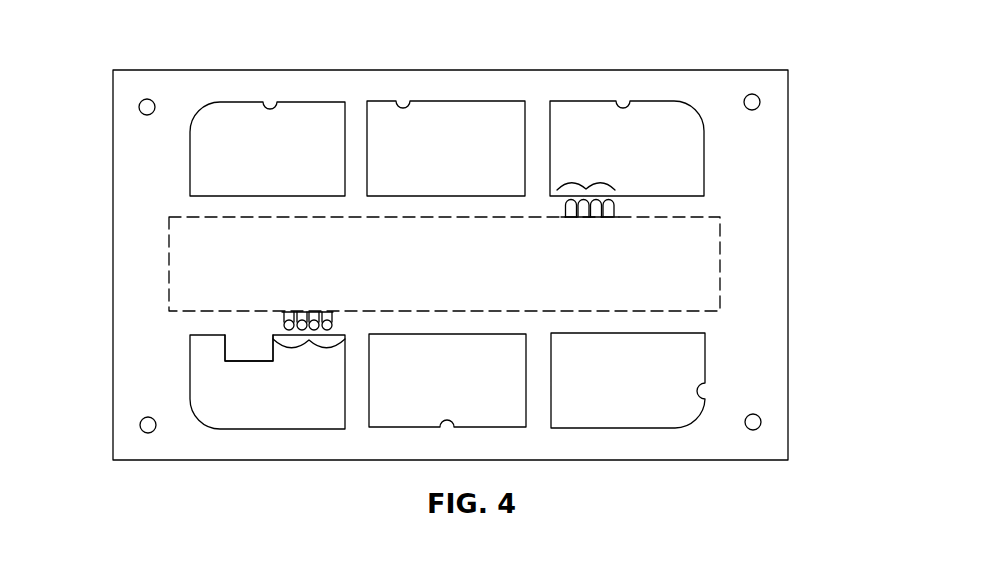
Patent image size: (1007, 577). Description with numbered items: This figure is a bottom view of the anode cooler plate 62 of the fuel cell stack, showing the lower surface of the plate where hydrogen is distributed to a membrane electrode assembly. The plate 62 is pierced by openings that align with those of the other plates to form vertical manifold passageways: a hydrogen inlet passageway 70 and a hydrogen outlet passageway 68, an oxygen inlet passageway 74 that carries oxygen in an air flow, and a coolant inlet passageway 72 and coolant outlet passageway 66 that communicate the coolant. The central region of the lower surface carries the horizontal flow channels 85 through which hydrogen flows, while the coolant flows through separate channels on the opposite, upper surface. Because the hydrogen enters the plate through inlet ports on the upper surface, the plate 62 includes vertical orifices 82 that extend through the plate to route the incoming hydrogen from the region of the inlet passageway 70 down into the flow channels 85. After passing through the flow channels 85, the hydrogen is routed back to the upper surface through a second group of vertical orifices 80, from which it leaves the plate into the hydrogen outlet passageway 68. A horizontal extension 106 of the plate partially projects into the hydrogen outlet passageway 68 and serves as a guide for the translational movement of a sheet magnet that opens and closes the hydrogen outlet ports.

The anode cooler plate 62 is at (792, 280).
The coolant outlet passageway 66 is at (442, 424).
The hydrogen outlet passageway 68 is at (207, 408).
The hydrogen inlet passageway 70 is at (627, 108).
The coolant inlet passageway 72 is at (410, 108).
The oxygen inlet passageway 74 is at (275, 109).
The vertical orifices 80 is at (310, 348).
The vertical orifices 82 is at (591, 187).
The lower surface flow channels 85 is at (169, 253).
The horizontal extension 106 is at (248, 360).